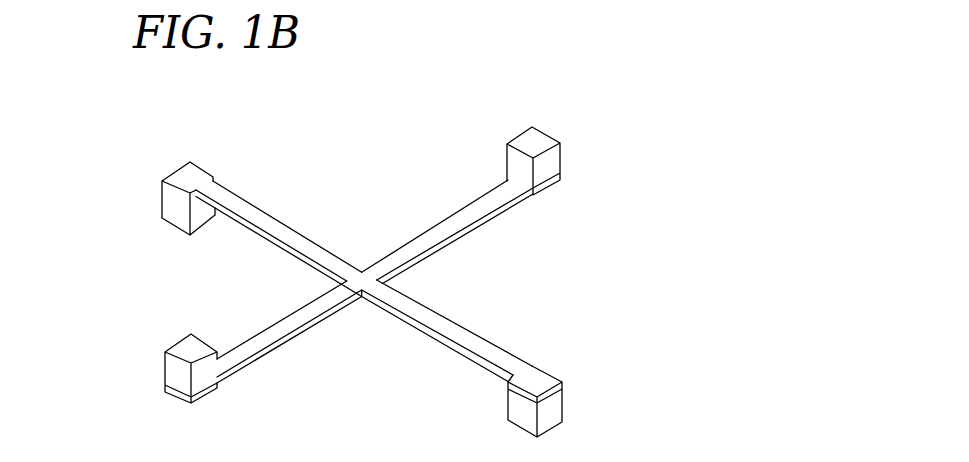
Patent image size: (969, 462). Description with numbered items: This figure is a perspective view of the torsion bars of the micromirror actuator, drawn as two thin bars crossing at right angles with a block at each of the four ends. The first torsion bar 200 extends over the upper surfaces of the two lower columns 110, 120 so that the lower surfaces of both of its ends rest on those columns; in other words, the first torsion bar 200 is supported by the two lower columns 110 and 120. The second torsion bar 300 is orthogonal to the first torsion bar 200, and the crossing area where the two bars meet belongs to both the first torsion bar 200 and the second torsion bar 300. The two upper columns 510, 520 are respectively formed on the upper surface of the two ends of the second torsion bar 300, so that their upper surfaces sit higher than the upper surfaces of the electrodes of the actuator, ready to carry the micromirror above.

The lower column 110 is at (552, 405).
The lower column 120 is at (163, 199).
The first torsion bar 200 is at (463, 336).
The second torsion bar 300 is at (285, 327).
The upper column 510 is at (165, 369).
The upper column 520 is at (509, 155).